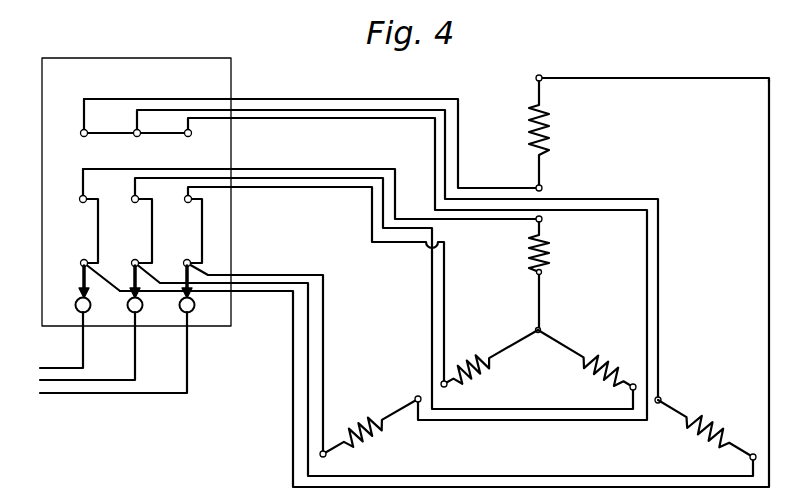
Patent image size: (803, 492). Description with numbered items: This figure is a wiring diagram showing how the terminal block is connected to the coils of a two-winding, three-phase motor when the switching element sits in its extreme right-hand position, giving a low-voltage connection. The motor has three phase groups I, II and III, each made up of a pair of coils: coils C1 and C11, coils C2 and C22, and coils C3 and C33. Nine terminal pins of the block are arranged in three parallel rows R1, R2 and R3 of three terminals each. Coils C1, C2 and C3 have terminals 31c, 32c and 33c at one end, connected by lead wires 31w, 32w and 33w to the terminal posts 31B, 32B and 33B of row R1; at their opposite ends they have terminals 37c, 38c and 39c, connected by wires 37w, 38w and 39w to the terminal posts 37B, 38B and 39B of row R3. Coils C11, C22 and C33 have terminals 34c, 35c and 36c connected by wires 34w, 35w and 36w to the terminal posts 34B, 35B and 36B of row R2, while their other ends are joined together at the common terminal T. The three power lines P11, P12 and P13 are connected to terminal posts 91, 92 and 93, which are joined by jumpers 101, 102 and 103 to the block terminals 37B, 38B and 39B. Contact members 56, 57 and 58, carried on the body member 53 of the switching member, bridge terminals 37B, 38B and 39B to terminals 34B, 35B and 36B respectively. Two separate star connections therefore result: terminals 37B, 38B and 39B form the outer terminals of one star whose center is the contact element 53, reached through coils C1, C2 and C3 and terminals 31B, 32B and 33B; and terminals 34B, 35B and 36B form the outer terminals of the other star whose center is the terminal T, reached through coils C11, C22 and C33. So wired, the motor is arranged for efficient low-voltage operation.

The terminal post 31B is at (83, 130).
The terminal post 32B is at (138, 138).
The terminal post 33B is at (190, 138).
The terminal post 34B is at (81, 196).
The terminal post 35B is at (133, 196).
The terminal post 36B is at (186, 196).
The terminal post 37B is at (83, 259).
The terminal post 38B is at (135, 259).
The terminal post 39B is at (187, 259).
The body member 53 is at (94, 140).
The contact member 56 is at (100, 212).
The contact member 57 is at (153, 214).
The contact member 58 is at (203, 228).
The jumper 101 is at (80, 280).
The jumper 102 is at (132, 278).
The jumper 103 is at (183, 280).
The terminal post 91 is at (76, 308).
The terminal post 92 is at (127, 308).
The terminal post 93 is at (179, 308).
The power line P11 is at (55, 366).
The power line P12 is at (47, 383).
The power line P13 is at (58, 393).
The row of terminal pins R1 is at (240, 129).
The row of terminal pins R2 is at (240, 198).
The row of terminal pins R3 is at (236, 266).
The lead wire 31w is at (377, 132).
The lead wire 32w is at (444, 151).
The lead wire 33w is at (436, 176).
The wire 34w is at (276, 168).
The wire 35w is at (373, 152).
The wire 36w is at (325, 188).
The wire 37w is at (238, 298).
The wire 38w is at (285, 290).
The wire 39w is at (313, 275).
The coil terminal 31c is at (544, 186).
The coil terminal 32c is at (662, 398).
The coil terminal 33c is at (418, 396).
The coil terminal 34c is at (544, 219).
The coil terminal 35c is at (630, 390).
The coil terminal 36c is at (449, 387).
The coil terminal 37c is at (536, 76).
The coil terminal 38c is at (748, 461).
The coil terminal 39c is at (326, 456).
The coil C1 is at (555, 130).
The coil C2 is at (740, 417).
The coil C3 is at (381, 447).
The coil C11 is at (555, 266).
The coil C22 is at (628, 335).
The coil C33 is at (491, 389).
The common terminal T is at (545, 327).
The phase group I is at (566, 68).
The phase group II is at (754, 432).
The phase group III is at (343, 420).